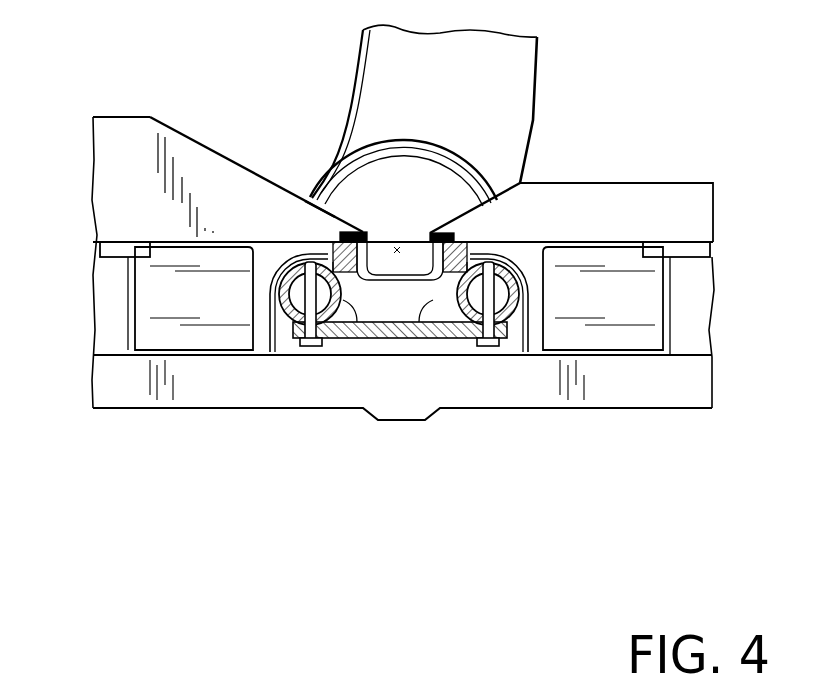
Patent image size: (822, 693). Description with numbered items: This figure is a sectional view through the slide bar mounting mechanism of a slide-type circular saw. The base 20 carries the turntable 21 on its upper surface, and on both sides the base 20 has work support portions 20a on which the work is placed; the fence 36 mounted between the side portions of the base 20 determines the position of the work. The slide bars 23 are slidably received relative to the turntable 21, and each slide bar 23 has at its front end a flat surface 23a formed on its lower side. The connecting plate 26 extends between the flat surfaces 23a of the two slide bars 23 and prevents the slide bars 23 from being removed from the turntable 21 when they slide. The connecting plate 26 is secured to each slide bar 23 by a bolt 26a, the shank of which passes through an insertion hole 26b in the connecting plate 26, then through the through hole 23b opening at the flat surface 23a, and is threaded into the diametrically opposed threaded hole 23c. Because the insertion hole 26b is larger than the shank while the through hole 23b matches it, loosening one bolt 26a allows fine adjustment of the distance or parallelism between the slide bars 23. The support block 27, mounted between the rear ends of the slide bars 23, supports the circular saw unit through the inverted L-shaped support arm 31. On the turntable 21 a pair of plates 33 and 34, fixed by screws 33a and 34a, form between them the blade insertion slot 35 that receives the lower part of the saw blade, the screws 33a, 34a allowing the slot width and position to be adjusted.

The base 20 is at (143, 397).
The work support portion 20a is at (120, 240).
The turntable 21 is at (500, 241).
The slide bar 23 is at (353, 352).
The flat surface 23a is at (290, 352).
The through hole 23b is at (242, 352).
The threaded hole 23c is at (268, 283).
The connecting plate 26 is at (400, 338).
The bolt 26a is at (307, 352).
The insertion hole 26b is at (337, 352).
The support block 27 is at (390, 183).
The support arm 31 is at (533, 80).
The plate 33 is at (362, 225).
The screw 33a is at (312, 202).
The plate 34 is at (465, 205).
The screw 34a is at (453, 236).
The blade insertion slot 35 is at (422, 202).
The fence 36 is at (138, 147).